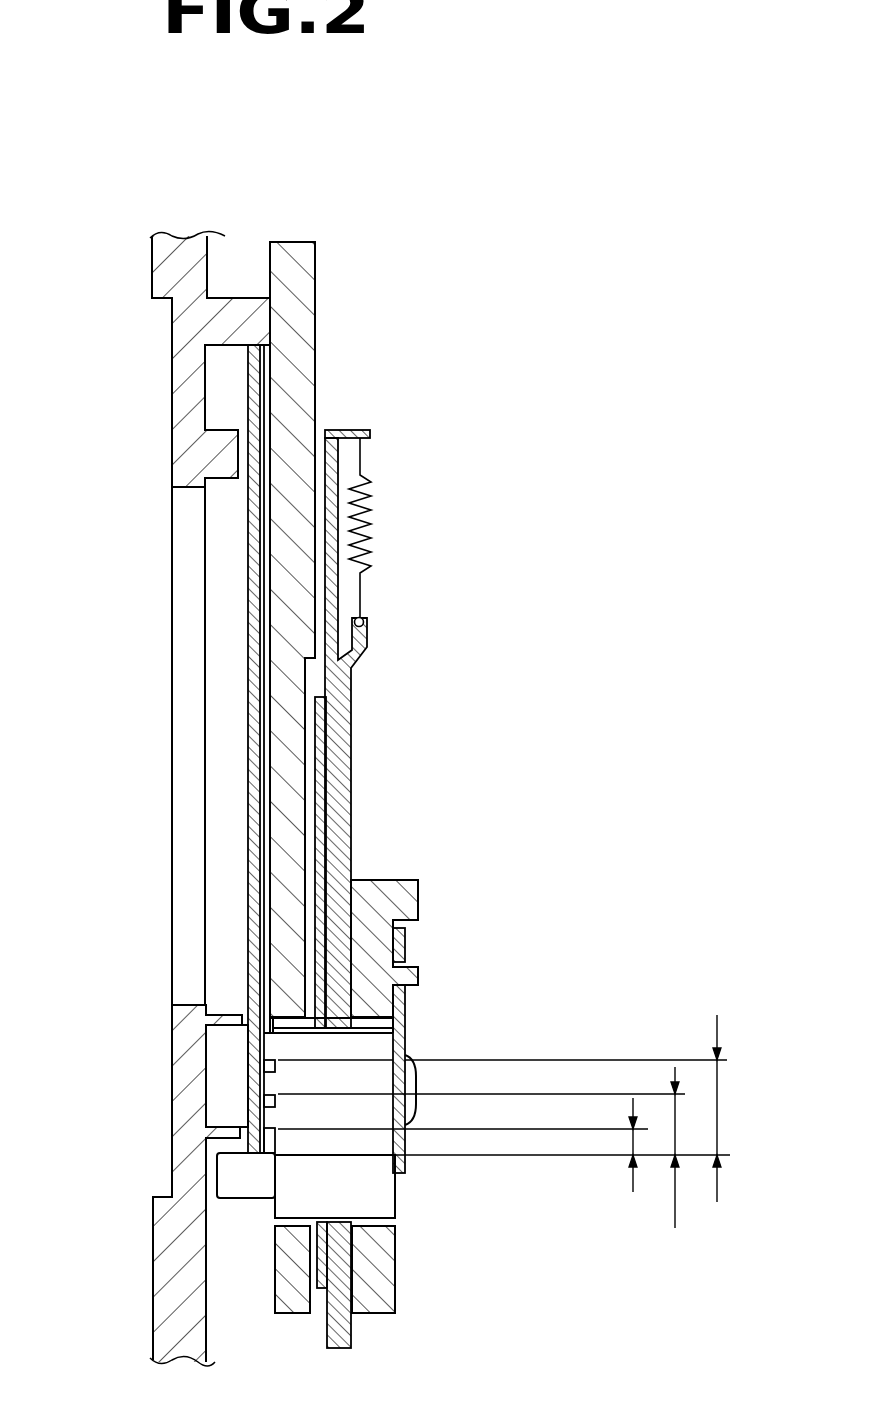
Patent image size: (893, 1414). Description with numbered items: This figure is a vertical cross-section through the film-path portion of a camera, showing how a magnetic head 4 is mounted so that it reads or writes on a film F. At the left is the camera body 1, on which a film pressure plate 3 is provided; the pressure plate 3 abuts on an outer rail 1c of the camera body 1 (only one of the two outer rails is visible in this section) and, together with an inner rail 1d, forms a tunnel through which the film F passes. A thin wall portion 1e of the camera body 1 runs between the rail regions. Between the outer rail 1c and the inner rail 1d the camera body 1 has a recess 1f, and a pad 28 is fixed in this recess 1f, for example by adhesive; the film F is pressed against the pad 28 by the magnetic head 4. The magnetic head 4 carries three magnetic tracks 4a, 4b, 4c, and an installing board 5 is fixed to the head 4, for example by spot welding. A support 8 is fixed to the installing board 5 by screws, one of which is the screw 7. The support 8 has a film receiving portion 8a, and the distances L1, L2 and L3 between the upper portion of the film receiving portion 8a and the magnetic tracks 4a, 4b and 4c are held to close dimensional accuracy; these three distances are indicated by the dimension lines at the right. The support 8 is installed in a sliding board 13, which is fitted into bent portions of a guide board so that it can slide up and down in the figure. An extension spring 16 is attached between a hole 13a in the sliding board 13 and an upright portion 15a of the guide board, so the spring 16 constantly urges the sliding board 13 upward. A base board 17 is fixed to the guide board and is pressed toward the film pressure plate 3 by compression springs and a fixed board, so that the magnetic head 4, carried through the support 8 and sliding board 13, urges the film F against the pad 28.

The camera body 1 is at (165, 1247).
The outer rail 1c is at (232, 326).
The inner rail 1d is at (220, 455).
The frame thin wall portion 1e is at (183, 652).
The recess 1f is at (200, 1057).
The pad 28 is at (222, 1093).
The film pressure plate 3 is at (308, 280).
The film F is at (258, 373).
The upright portion of the guide board 15a is at (355, 433).
The extension spring 16 is at (372, 524).
The hole 13a is at (365, 623).
The sliding board 13 is at (345, 737).
The base board 17 is at (322, 815).
The support 8 is at (390, 905).
The installing board 5 is at (403, 1003).
The screw 7 is at (420, 1057).
The magnetic track 4a is at (278, 1050).
The magnetic track 4b is at (280, 1077).
The magnetic track 4c is at (280, 1107).
The magnetic head 4 is at (373, 1198).
The film receiving portion 8a is at (250, 1187).
The distance L1 is at (720, 1128).
The distance L2 is at (673, 1171).
The distance L3 is at (633, 1169).